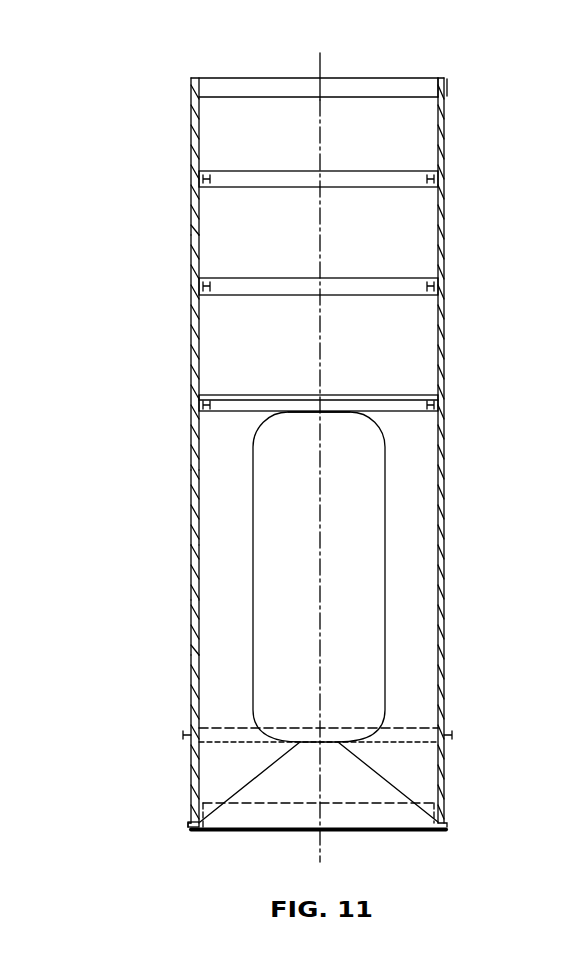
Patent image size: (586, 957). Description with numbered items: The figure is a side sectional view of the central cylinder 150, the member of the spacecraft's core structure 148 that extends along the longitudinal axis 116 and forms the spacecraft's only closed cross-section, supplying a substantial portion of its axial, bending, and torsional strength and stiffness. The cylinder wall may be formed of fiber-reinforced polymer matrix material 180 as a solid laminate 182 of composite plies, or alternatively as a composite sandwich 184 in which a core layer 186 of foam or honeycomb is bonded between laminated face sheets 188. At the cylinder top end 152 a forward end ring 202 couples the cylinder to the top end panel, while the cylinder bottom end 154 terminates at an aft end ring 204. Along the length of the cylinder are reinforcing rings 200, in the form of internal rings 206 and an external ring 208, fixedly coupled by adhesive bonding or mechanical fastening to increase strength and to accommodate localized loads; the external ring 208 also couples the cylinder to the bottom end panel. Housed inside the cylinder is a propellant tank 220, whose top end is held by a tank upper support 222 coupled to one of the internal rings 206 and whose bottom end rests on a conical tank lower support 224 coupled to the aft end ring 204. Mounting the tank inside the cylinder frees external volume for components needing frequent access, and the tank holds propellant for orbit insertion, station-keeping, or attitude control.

The longitudinal axis 116 is at (320, 66).
The cylinder top end 152 is at (191, 79).
The forward end ring 202 is at (446, 79).
The core structure 148 is at (191, 125).
The central cylinder 150 is at (191, 252).
The reinforcing rings 200 is at (232, 188).
The internal rings 206 is at (415, 188).
The tank upper support 222 is at (373, 400).
The propellant tank 220 is at (385, 508).
The fiber-reinforced polymer matrix material 180 is at (191, 515).
The composite sandwich 184 is at (191, 575).
The core layer 186 is at (191, 625).
The laminated face sheets 188 is at (191, 683).
The solid laminate 182 is at (443, 607).
The external ring 208 is at (447, 735).
The conical tank lower support 224 is at (385, 777).
The aft end ring 204 is at (447, 822).
The cylinder bottom end 154 is at (197, 820).